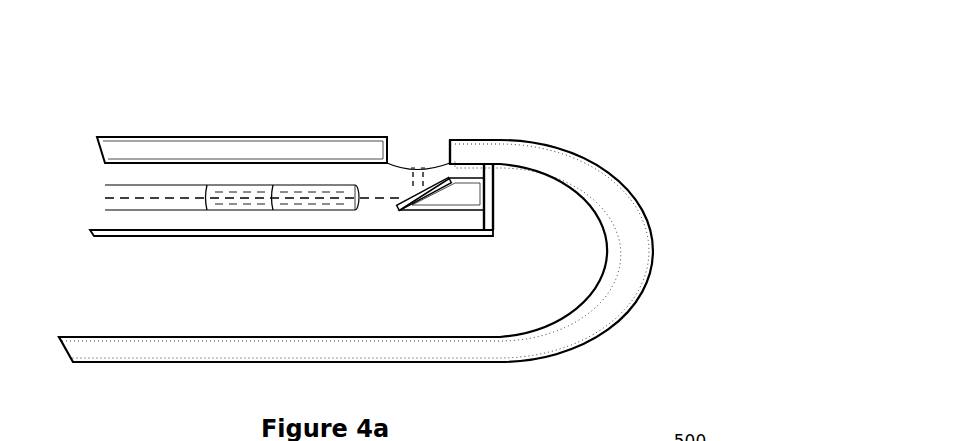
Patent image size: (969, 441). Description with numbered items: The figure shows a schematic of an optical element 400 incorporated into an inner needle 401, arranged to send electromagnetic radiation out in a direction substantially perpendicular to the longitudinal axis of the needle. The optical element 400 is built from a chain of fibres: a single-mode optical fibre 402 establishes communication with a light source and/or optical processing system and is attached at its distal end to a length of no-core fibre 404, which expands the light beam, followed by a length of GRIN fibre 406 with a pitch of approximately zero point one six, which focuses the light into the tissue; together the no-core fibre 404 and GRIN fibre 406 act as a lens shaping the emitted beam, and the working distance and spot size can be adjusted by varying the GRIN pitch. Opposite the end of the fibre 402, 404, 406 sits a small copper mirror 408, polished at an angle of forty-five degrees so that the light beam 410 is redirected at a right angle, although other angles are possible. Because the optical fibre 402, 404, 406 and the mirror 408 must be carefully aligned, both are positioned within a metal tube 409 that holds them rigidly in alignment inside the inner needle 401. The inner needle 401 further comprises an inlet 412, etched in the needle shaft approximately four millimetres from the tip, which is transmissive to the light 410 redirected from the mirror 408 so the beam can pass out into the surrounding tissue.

The optical element 400 is at (570, 90).
The inner needle 401 is at (132, 150).
The single-mode optical fibre 402 is at (160, 208).
The no-core fibre 404 is at (238, 186).
The GRIN fibre 406 is at (311, 186).
The copper mirror 408 is at (428, 180).
The metal tube 409 is at (307, 236).
The light beam 410 is at (428, 153).
The inlet 412 is at (402, 153).